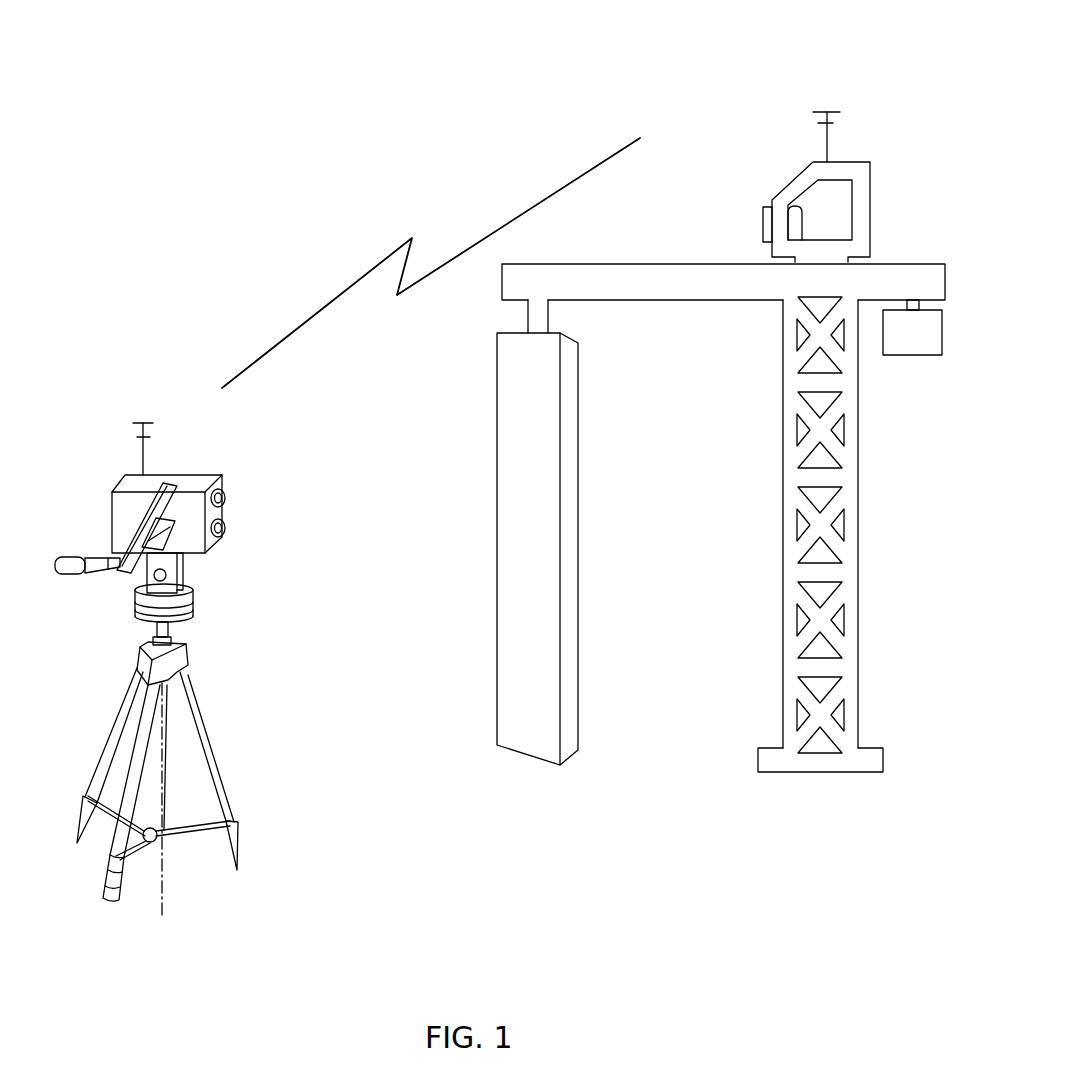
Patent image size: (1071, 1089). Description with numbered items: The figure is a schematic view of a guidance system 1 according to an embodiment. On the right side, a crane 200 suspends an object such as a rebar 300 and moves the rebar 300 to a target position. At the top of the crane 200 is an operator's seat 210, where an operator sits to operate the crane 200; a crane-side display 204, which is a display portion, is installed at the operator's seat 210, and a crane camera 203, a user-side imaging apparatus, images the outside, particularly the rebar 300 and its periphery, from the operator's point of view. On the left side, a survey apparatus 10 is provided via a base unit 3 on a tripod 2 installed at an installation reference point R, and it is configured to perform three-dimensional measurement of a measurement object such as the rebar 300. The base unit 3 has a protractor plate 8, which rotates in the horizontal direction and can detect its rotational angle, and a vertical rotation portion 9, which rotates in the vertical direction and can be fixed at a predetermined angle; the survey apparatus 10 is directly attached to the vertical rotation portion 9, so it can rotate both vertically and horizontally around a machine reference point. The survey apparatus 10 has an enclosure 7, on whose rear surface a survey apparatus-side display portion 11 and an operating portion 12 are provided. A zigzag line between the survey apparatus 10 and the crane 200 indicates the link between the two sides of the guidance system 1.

The guidance system 1 is at (487, 100).
The survey apparatus 10 is at (105, 450).
The enclosure 7 is at (197, 473).
The survey apparatus-side display portion 11 is at (108, 510).
The operating portion 12 is at (110, 532).
The vertical rotation portion 9 is at (143, 573).
The base unit 3 is at (188, 590).
The protractor plate 8 is at (192, 615).
The tripod 2 is at (122, 718).
The installation reference point R is at (163, 887).
The crane 200 is at (880, 150).
The crane camera 203 is at (762, 218).
The crane-side display 204 is at (803, 196).
The operator's seat 210 is at (836, 225).
The rebar 300 is at (580, 452).